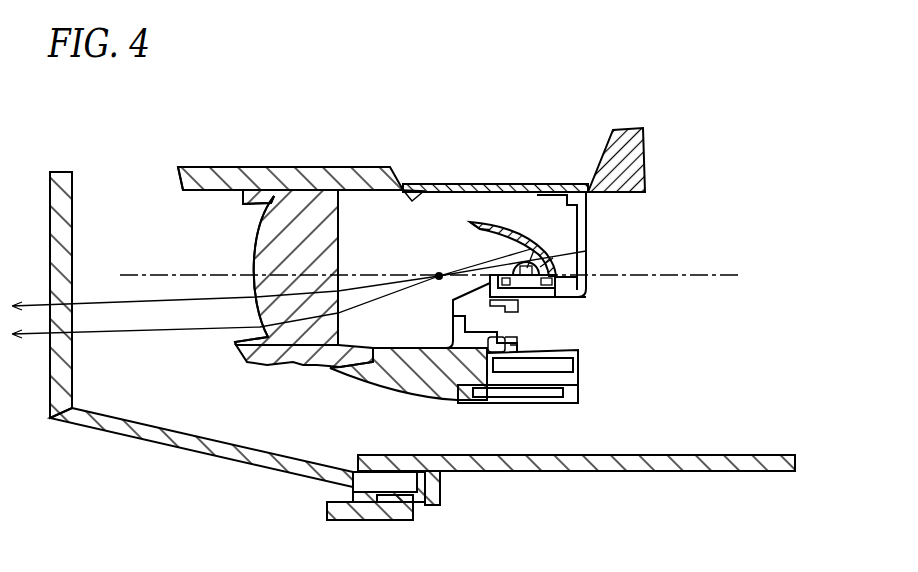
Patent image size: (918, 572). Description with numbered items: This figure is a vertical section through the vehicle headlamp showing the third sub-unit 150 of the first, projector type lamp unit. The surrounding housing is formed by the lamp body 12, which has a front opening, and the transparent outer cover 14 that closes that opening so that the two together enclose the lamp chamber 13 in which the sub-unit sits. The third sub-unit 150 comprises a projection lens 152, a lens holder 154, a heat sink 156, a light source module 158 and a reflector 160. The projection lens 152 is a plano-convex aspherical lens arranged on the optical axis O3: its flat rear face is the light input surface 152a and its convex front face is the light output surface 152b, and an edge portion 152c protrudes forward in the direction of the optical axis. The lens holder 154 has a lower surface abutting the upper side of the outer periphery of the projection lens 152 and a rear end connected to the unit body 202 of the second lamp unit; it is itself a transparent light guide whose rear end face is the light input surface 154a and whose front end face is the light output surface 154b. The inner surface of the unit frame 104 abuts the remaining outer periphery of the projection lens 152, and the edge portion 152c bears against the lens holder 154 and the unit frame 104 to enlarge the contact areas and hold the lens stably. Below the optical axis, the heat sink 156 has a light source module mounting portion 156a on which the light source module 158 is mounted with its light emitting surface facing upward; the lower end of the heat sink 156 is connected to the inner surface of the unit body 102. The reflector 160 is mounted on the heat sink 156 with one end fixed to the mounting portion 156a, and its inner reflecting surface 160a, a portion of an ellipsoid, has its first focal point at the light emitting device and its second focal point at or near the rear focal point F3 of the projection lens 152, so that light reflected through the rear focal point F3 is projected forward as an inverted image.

The lamp body 12 is at (501, 472).
The lamp chamber 13 is at (233, 426).
The outer cover 14 is at (123, 438).
The unit body 102 is at (373, 393).
The unit frame 104 is at (262, 367).
The third sub-unit 150 is at (701, 206).
The projection lens 152 is at (253, 297).
The light input surface 152a is at (341, 247).
The light output surface 152b is at (254, 249).
The edge portion 152c is at (262, 200).
The lens holder 154 is at (343, 166).
The light input surface 154a is at (405, 185).
The light output surface 154b is at (178, 178).
The heat sink 156 is at (490, 401).
The light source module mounting portion 156a is at (588, 298).
The light source module 158 is at (581, 258).
The reflector 160 is at (508, 228).
The reflecting surface 160a is at (458, 242).
The unit body 202 is at (554, 189).
The rear focal point F3 is at (439, 281).
The optical axis O3 is at (124, 273).